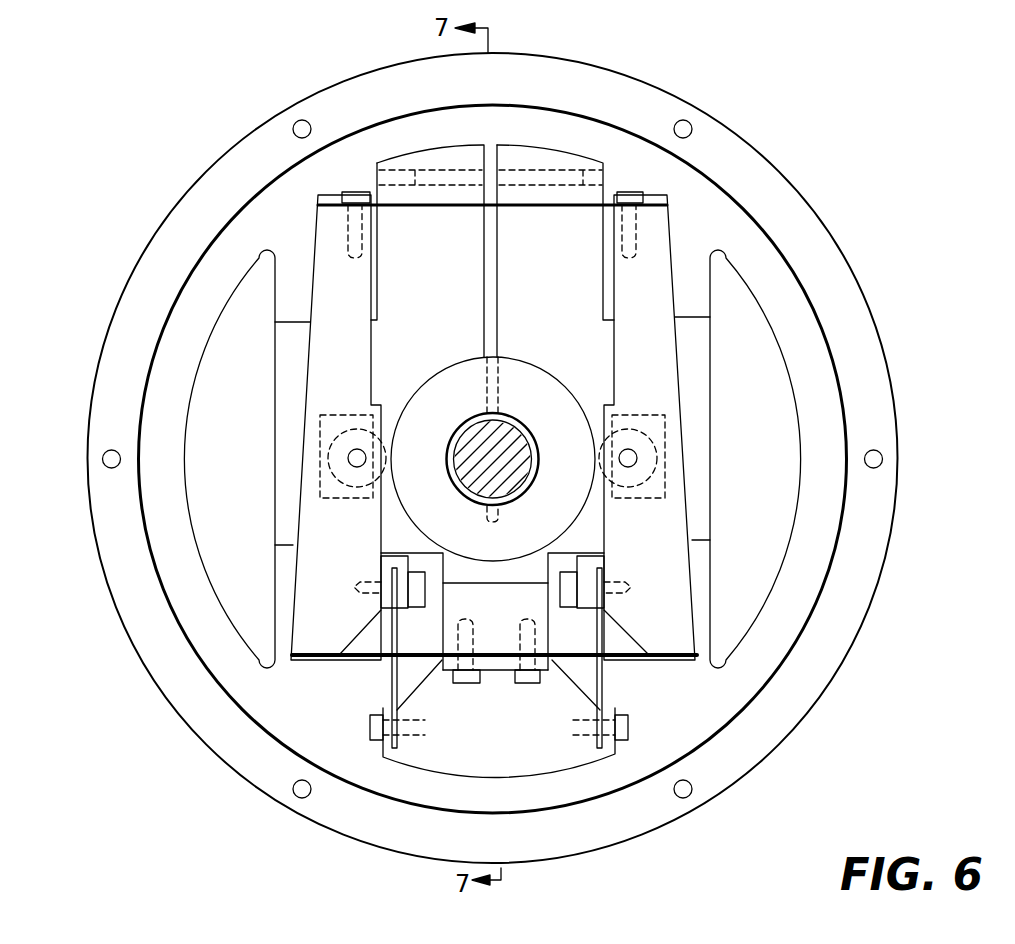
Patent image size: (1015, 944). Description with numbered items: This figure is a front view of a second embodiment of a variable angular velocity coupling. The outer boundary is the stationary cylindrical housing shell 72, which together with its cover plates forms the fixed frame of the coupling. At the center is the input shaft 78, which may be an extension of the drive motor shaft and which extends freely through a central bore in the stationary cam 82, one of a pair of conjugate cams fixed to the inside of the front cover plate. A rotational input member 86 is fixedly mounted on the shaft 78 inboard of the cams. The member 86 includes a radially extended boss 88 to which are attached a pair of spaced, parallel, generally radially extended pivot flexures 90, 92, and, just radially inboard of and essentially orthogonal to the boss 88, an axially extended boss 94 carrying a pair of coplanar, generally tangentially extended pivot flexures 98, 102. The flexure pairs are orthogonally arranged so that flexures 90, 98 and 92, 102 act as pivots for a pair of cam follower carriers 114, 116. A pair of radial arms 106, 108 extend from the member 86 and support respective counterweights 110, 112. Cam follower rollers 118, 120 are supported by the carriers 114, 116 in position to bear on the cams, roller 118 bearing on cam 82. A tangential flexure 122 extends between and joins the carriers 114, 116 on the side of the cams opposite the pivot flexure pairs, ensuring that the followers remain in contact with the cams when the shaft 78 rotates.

The stationary cylindrical housing shell 72 is at (782, 717).
The input shaft 78 is at (523, 468).
The stationary cam 82 is at (510, 378).
The rotational input member 86 is at (550, 158).
The radially extended boss 88 is at (512, 762).
The pivot flexure 90 is at (392, 670).
The pivot flexure 92 is at (602, 672).
The axially extended boss 94 is at (510, 631).
The pivot flexure 98 is at (420, 658).
The pivot flexure 102 is at (563, 658).
The radial arm 106 is at (296, 345).
The radial arm 108 is at (693, 348).
The counterweight 110 is at (232, 508).
The counterweight 112 is at (757, 508).
The cam follower carrier 114 is at (353, 369).
The cam follower carrier 116 is at (655, 369).
The cam follower roller 118 is at (383, 448).
The cam follower roller 120 is at (597, 448).
The tangential flexure 122 is at (418, 206).